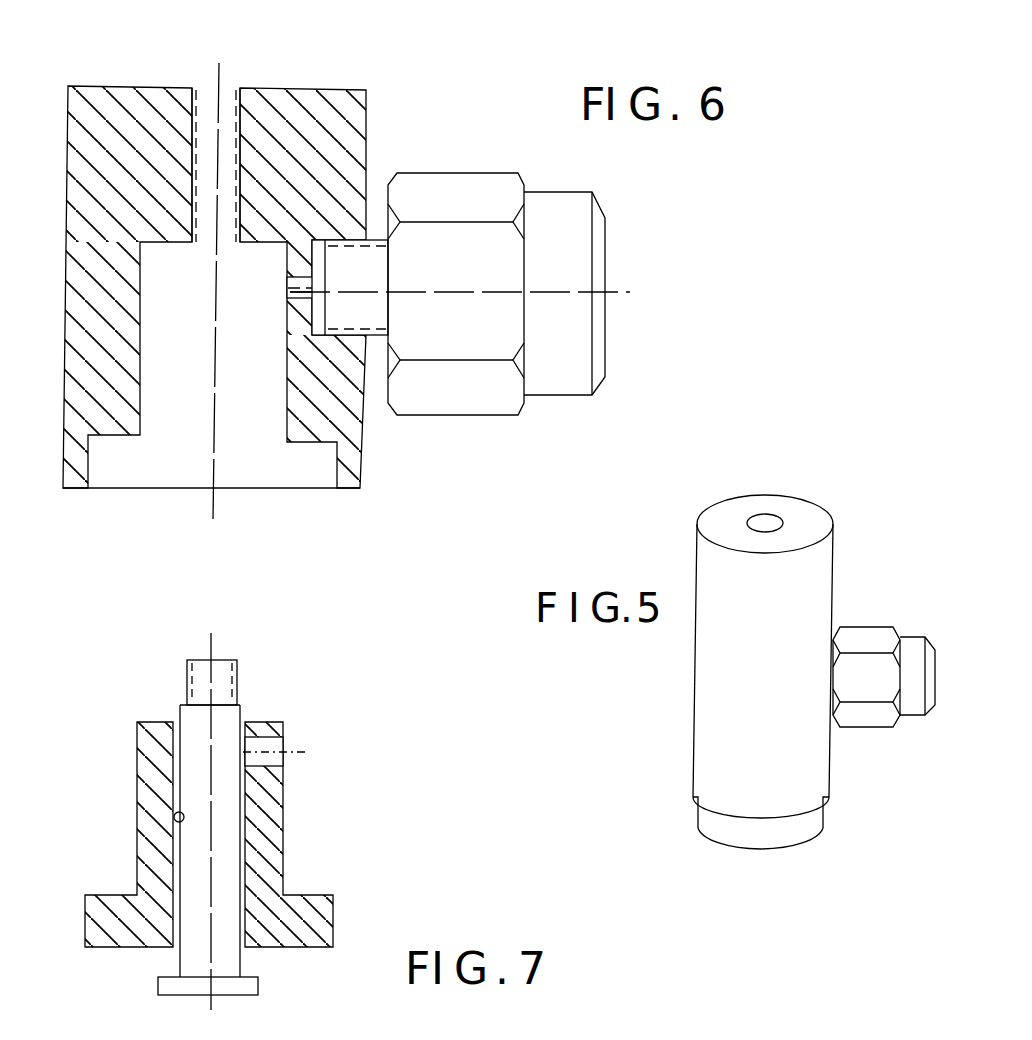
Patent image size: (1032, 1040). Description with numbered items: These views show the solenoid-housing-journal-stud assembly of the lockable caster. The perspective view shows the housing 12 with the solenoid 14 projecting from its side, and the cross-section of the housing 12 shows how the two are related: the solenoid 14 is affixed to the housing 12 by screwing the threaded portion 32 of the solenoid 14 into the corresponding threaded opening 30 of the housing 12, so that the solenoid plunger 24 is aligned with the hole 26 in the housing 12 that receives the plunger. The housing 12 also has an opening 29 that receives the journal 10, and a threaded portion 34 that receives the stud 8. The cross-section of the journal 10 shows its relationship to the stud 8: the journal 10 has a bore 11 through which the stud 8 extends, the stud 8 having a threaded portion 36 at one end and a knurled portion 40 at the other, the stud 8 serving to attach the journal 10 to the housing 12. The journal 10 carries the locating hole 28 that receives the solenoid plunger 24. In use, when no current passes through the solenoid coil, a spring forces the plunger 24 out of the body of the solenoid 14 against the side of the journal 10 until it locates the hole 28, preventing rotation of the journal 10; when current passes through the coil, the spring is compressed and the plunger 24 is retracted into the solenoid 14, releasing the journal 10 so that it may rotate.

In FIG. 7, the stud 8 is at (180, 950).
In FIG. 5, the journal 10 is at (823, 823).
In FIG. 7, the journal 10 is at (333, 905).
In FIG. 7, the bore in journal 11 is at (174, 816).
In FIG. 5, the housing 12 is at (692, 697).
In FIG. 6, the solenoid 14 is at (475, 172).
In FIG. 5, the solenoid 14 is at (862, 627).
In FIG. 6, the solenoid plunger 24 is at (320, 284).
In FIG. 6, the hole in housing to receive solenoid plunger 26 is at (288, 290).
In FIG. 7, the hole in journal to receive solenoid plunger 28 is at (283, 748).
In FIG. 6, the opening in housing to receive journal 29 is at (168, 468).
In FIG. 6, the threaded opening in housing to receive solenoid 30 is at (374, 338).
In FIG. 6, the threaded portion of solenoid 32 is at (374, 238).
In FIG. 6, the threaded portion of housing to receive stud 34 is at (186, 174).
In FIG. 7, the threaded portion of stud 36 is at (238, 680).
In FIG. 7, the knurled portion of stud 40 is at (258, 985).